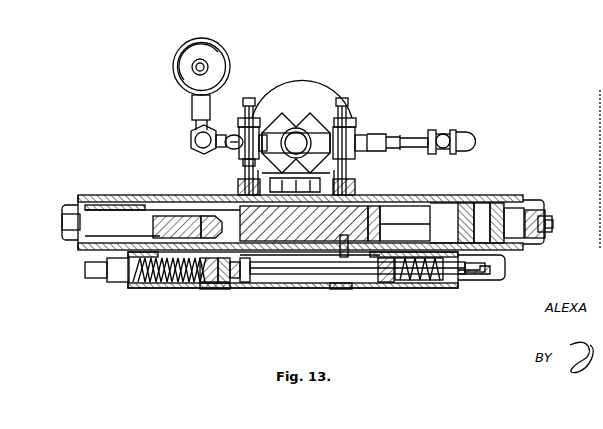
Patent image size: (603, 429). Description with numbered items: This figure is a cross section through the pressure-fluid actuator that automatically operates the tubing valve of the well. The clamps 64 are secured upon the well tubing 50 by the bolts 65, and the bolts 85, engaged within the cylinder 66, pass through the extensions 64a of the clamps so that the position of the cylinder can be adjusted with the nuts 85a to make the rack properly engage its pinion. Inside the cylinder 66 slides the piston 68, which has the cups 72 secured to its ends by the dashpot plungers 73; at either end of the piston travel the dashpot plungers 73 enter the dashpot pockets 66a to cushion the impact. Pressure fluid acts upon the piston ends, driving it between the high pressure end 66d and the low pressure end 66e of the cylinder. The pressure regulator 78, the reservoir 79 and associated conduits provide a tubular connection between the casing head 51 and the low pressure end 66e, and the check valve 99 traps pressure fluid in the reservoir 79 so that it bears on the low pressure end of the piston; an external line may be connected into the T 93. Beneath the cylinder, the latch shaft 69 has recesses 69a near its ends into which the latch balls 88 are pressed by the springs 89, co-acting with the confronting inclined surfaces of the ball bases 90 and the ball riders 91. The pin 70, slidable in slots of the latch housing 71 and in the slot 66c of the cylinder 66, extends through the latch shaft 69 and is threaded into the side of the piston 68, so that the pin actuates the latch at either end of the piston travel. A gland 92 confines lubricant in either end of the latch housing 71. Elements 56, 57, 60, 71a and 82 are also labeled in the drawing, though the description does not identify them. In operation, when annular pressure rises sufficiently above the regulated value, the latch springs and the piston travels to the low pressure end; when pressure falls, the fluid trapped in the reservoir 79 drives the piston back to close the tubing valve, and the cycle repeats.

The well tubing 50 is at (299, 126).
The casing head 51 is at (313, 130).
The member 56 is at (602, 178).
The member 57 is at (602, 205).
The member 60 is at (602, 113).
The clamps 64 is at (318, 112).
The extensions 64a is at (352, 130).
The bolts 65 is at (268, 118).
The cylinder 66 is at (394, 197).
The dashpot pockets 66a is at (551, 222).
The slot 66c is at (310, 290).
The high pressure end 66d is at (540, 268).
The low pressure end 66e is at (56, 261).
The piston 68 is at (436, 222).
The latch shaft 69 is at (357, 284).
The recesses 69a is at (370, 293).
The pin 70 is at (316, 297).
The latch housing 71 is at (135, 307).
The plug portion 71a is at (352, 281).
The cups 72 is at (490, 206).
The dashpot plungers 73 is at (346, 210).
The pressure regulator 78 is at (186, 134).
The reservoir 79 is at (225, 54).
The ball joint 82 is at (446, 135).
The bolts 85 is at (370, 163).
The nuts 85a is at (243, 152).
The latch balls 88 is at (329, 306).
The springs 89 is at (153, 297).
The ball bases 90 is at (241, 314).
The ball riders 91 is at (176, 316).
The gland 92 is at (336, 291).
The T 93 is at (472, 139).
The check valve 99 is at (229, 129).